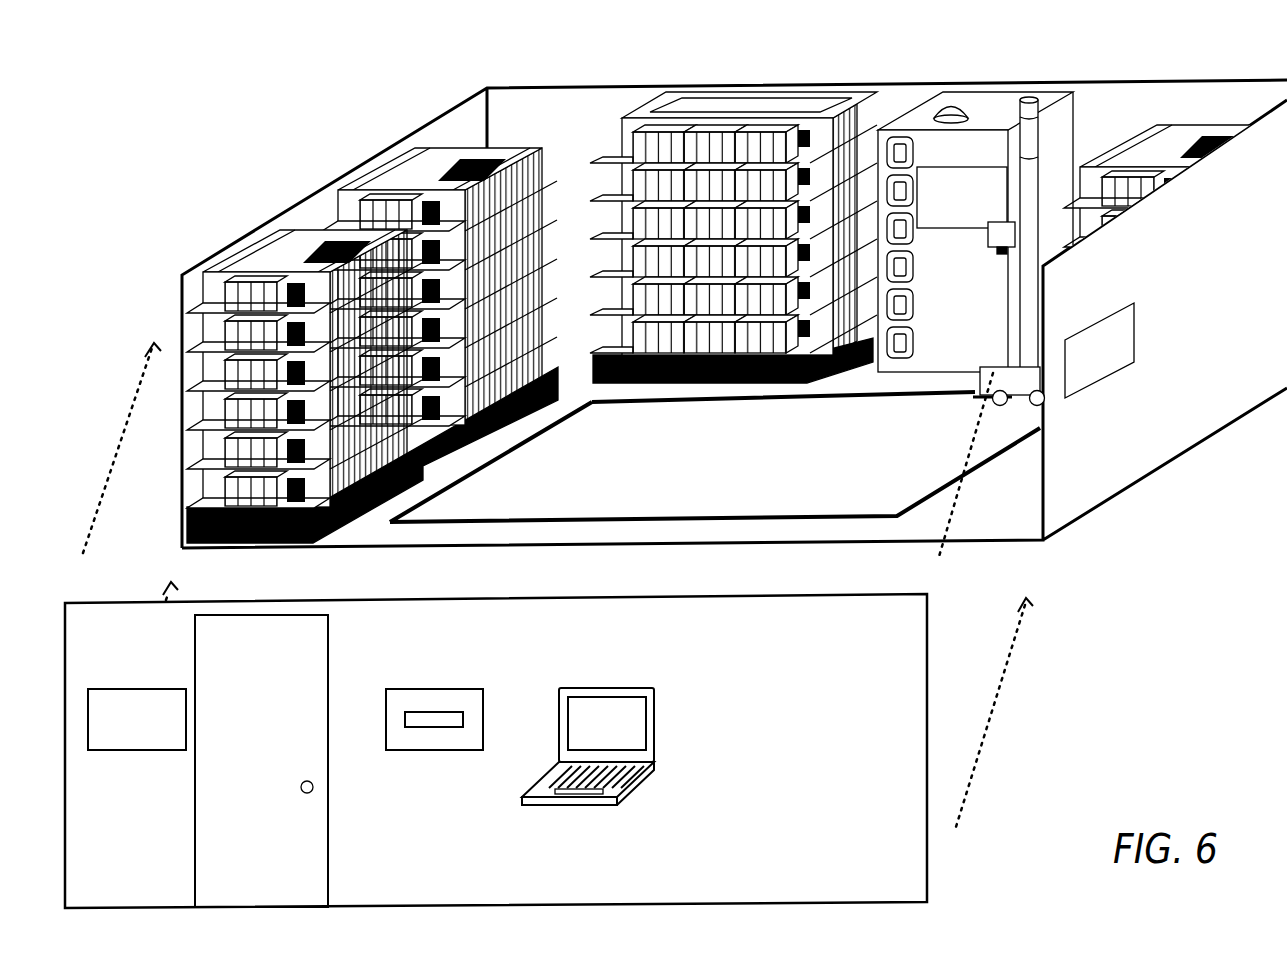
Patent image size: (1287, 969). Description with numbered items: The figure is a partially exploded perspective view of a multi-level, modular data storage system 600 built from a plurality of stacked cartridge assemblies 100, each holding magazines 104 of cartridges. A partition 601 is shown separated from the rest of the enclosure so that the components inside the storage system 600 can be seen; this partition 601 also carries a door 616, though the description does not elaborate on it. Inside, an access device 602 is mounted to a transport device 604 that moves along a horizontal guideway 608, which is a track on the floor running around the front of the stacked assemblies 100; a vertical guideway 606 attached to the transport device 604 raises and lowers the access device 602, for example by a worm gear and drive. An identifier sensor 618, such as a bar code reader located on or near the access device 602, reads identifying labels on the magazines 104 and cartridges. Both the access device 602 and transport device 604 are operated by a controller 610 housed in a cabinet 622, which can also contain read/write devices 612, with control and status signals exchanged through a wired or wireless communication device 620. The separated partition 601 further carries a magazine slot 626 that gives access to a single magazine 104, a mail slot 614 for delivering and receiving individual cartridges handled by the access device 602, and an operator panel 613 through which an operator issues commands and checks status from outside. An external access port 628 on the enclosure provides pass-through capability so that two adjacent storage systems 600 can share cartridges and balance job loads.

The storage system 600 is at (1118, 44).
The cartridge assembly 100 is at (733, 104).
The magazine 104 is at (227, 415).
The partition 601 is at (866, 623).
The access device 602 is at (988, 238).
The transport device 604 is at (978, 398).
The vertical guideway 606 is at (1042, 160).
The horizontal guideway 608 is at (742, 403).
The controller 610 is at (990, 217).
The read/write devices 612 is at (915, 348).
The operator panel 613 is at (643, 787).
The mail slot 614 is at (427, 752).
The door 616 is at (315, 847).
The identifier sensor 618 is at (1003, 256).
The communication device 620 is at (950, 104).
The cabinet 622 is at (975, 232).
The magazine slot 626 is at (125, 750).
The external access port 628 is at (1135, 327).